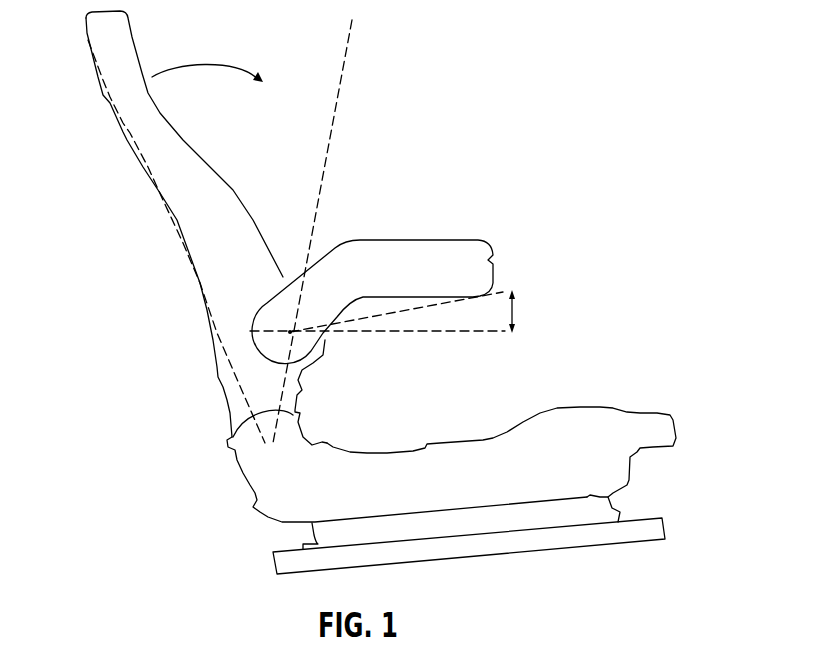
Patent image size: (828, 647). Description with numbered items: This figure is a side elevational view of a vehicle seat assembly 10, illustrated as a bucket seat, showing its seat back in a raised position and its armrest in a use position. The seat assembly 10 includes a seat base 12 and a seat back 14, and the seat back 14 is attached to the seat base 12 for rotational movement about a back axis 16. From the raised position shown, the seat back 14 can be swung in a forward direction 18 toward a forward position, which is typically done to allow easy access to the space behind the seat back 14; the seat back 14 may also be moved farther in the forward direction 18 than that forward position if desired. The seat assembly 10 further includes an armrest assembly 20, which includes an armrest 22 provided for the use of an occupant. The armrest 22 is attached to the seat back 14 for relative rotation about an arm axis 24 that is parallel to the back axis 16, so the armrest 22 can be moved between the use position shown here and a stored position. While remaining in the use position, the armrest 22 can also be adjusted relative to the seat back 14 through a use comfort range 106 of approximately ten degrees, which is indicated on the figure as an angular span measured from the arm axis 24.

The seat assembly 10 is at (541, 70).
The seat base 12 is at (612, 405).
The seat back 14 is at (228, 183).
The back axis 16 is at (268, 433).
The forward direction 18 is at (217, 62).
The armrest assembly 20 is at (475, 220).
The armrest 22 is at (408, 238).
The arm axis 24 is at (253, 327).
The use comfort range 106 is at (515, 312).